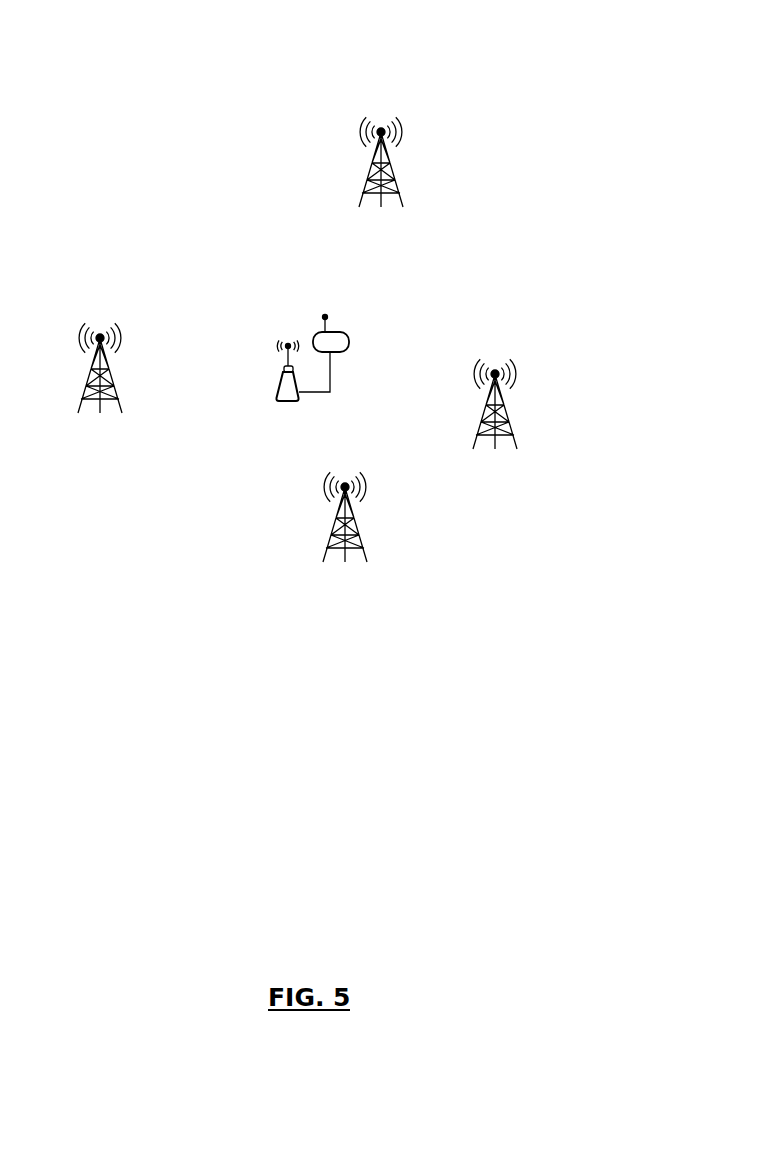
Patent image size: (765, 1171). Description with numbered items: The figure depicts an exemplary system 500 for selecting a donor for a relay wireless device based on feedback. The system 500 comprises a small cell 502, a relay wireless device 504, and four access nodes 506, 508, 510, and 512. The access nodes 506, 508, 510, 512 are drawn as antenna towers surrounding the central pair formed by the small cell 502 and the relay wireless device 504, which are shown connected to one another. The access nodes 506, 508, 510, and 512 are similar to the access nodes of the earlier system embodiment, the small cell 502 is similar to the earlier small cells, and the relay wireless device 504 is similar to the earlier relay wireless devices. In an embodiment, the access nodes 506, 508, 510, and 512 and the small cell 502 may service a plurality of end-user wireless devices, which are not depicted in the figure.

The system 500 is at (620, 50).
The small cell 502 is at (282, 368).
The relay wireless device 504 is at (349, 333).
The access node 506 is at (124, 382).
The access node 508 is at (405, 176).
The access node 510 is at (519, 418).
The access node 512 is at (369, 531).